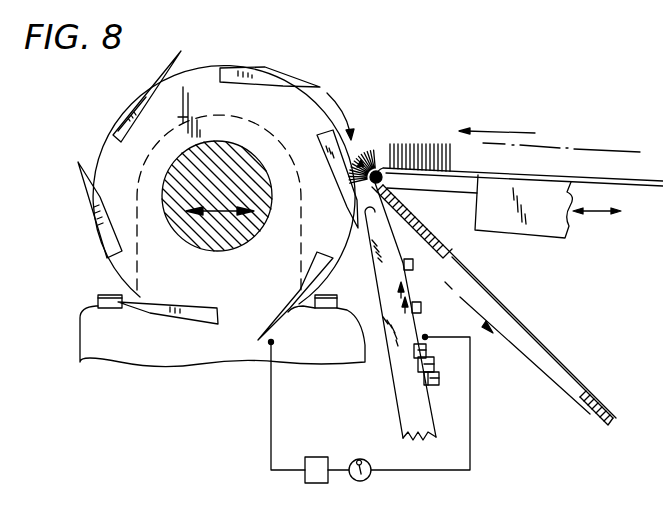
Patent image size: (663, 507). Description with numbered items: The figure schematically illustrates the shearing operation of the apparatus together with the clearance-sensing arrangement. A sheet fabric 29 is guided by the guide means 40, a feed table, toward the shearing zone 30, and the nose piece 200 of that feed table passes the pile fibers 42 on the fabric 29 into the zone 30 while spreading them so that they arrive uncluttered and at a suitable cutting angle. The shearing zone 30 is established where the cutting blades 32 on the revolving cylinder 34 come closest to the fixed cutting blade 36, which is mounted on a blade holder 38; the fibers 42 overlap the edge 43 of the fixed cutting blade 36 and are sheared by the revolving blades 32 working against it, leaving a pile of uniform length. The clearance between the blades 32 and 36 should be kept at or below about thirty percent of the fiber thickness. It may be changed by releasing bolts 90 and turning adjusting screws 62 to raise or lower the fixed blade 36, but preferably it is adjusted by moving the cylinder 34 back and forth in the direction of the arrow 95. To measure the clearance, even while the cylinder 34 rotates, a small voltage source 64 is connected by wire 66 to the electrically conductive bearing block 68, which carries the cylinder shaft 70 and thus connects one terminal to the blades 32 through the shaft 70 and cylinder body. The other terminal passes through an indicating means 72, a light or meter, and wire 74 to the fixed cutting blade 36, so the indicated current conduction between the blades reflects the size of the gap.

The sheet fabric 29 is at (633, 179).
The shearing zone 30 is at (360, 163).
The cutting blades 32 is at (267, 75).
The revolving cylinder 34 is at (193, 80).
The fixed cutting blade 36 is at (390, 236).
The blade holder 38 is at (407, 410).
The guide means 40 is at (549, 226).
The pile fibers 42 is at (413, 146).
The edge of fixed cutting blade 43 is at (370, 184).
The adjusting screws 62 is at (440, 386).
The voltage source 64 is at (317, 462).
The wire 66 is at (270, 408).
The bearing block 68 is at (267, 103).
The cylinder shaft 70 is at (198, 238).
The indicating means 72 is at (362, 481).
The wire 74 is at (438, 473).
The bolts 90 is at (423, 310).
The arrow 95 is at (230, 213).
The nose piece 200 is at (463, 182).